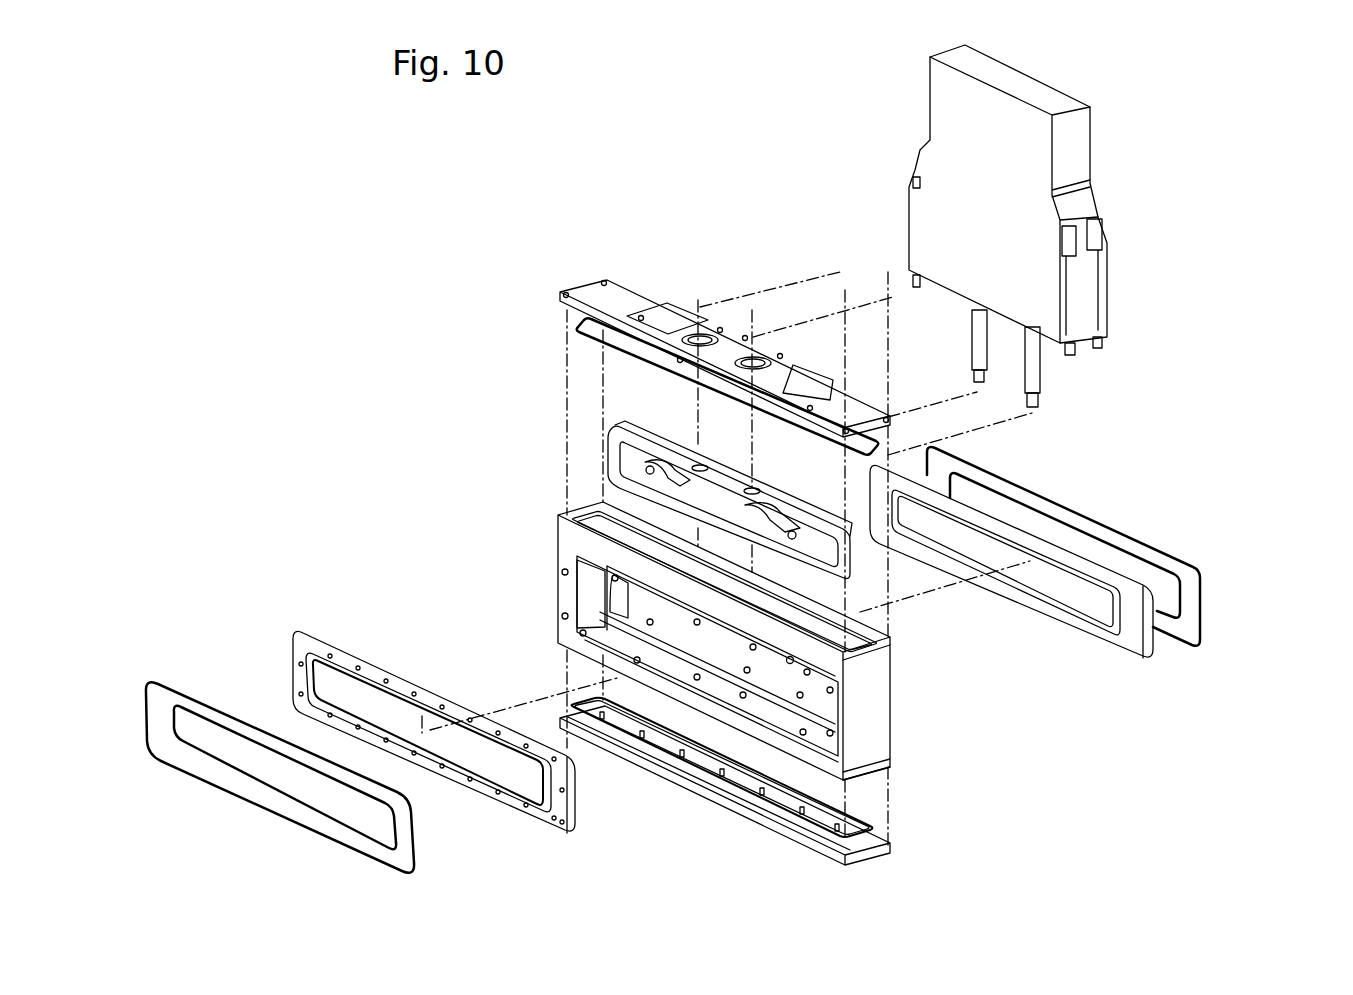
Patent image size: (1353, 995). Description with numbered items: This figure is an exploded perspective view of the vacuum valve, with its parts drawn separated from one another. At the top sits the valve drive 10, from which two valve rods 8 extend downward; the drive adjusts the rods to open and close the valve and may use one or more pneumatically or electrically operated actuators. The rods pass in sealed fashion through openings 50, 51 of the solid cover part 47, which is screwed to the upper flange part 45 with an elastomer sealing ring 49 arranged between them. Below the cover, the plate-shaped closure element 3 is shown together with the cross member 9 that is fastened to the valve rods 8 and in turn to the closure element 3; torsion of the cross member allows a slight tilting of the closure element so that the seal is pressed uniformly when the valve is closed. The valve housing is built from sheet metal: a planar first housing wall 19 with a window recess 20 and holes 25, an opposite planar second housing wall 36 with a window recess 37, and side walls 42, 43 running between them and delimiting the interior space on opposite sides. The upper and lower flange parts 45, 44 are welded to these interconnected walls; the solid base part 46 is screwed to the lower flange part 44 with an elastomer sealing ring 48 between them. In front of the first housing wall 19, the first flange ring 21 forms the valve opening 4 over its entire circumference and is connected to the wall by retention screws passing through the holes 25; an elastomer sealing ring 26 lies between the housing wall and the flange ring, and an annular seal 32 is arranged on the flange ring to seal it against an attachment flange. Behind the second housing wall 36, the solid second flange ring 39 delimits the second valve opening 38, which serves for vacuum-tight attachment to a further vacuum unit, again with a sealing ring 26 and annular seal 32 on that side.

The valve drive 10 is at (1105, 198).
The valve rods 8 is at (1032, 363).
The cover part 47 is at (592, 289).
The elastomer sealing ring 49 is at (650, 357).
The opening 50 is at (710, 333).
The opening 51 is at (757, 357).
The closure element 3 is at (630, 459).
The cross member 9 is at (667, 491).
The first housing wall 19 is at (585, 547).
The upper flange part 45 is at (880, 650).
The side wall 43 is at (570, 592).
The second housing wall 36 is at (630, 630).
The window recess 37 is at (675, 628).
The window recess 20 is at (790, 658).
The holes 25 is at (830, 733).
The side wall 42 is at (883, 755).
The lower flange part 44 is at (887, 768).
The base part 46 is at (807, 843).
The elastomer sealing ring 48 is at (725, 780).
The valve opening 4 is at (357, 690).
The first flange ring 21 is at (507, 800).
The elastomer sealing ring 26 is at (290, 825).
The annular seal 32 is at (233, 777).
The second flange ring 39 is at (1117, 647).
The second valve opening 38 is at (1060, 590).